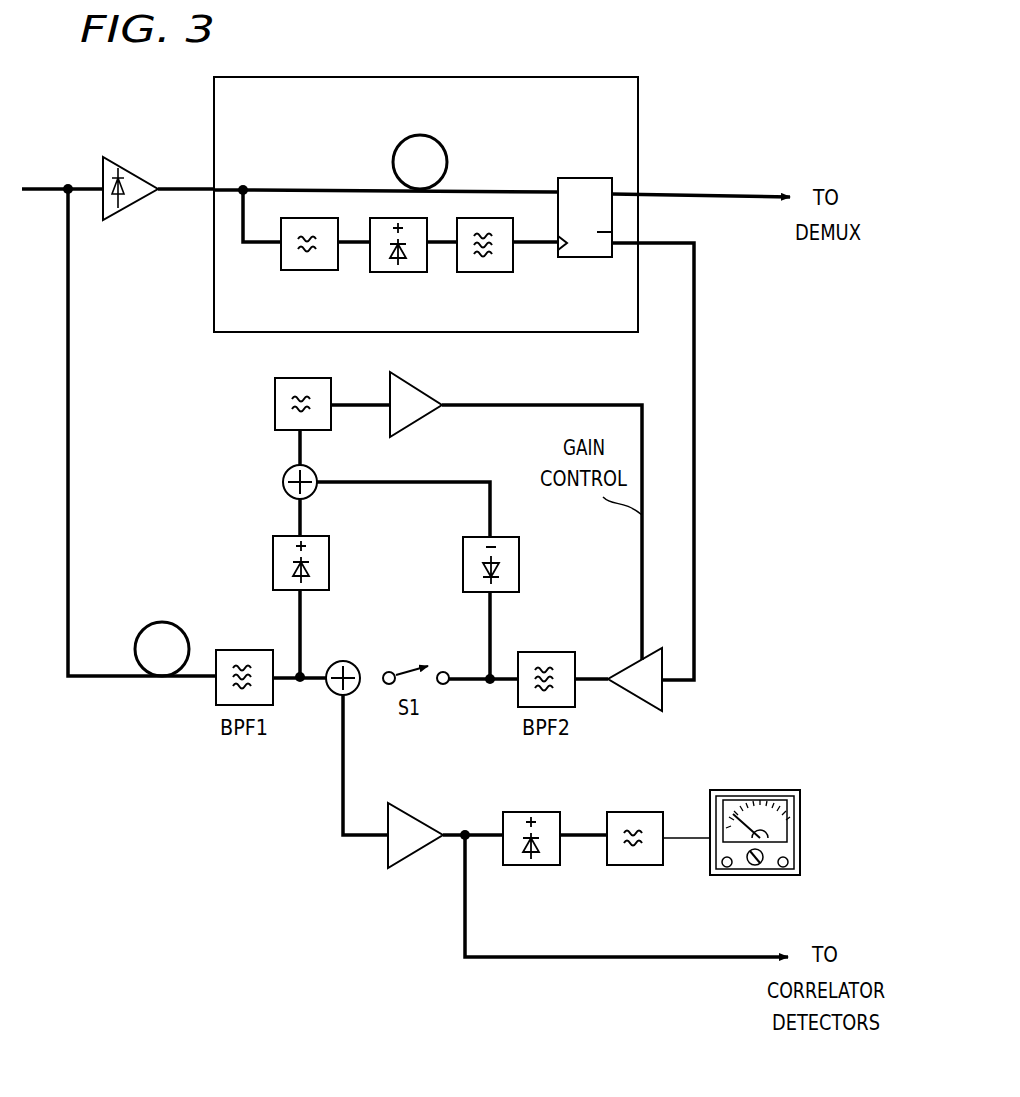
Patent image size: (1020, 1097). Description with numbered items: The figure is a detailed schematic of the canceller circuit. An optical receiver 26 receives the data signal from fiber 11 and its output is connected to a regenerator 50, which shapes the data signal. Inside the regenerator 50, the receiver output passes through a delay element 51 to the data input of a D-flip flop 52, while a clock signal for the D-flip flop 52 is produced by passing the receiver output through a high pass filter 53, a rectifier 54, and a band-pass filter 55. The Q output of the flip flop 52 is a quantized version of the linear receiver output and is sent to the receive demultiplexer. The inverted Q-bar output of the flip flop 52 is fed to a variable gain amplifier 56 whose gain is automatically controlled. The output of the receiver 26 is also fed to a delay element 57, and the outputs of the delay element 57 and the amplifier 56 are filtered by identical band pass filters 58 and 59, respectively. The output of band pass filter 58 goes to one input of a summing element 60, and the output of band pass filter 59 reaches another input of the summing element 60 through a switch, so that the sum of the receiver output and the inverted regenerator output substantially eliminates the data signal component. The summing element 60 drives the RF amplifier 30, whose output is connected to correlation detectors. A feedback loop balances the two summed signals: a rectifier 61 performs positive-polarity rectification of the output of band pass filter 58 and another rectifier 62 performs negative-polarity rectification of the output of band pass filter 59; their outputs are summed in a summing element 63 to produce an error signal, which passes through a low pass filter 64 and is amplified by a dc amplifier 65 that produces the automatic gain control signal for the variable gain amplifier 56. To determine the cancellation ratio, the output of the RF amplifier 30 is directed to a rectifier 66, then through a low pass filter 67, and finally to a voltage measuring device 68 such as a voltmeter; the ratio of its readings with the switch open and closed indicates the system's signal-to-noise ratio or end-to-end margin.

The fiber 11 is at (39, 184).
The optical receiver 26 is at (124, 160).
The RF amplifier 30 is at (398, 808).
The regenerator 50 is at (418, 77).
The delay element 51 is at (393, 157).
The D-flip flop 52 is at (585, 178).
The high pass filter 53 is at (298, 270).
The rectifier 54 is at (386, 272).
The band-pass filter 55 is at (478, 272).
The variable gain amplifier 56 is at (664, 712).
The delay element 57 is at (153, 620).
The band pass filter 58 is at (240, 650).
The band pass filter 59 is at (544, 651).
The summing element 60 is at (350, 660).
The rectifier 61 is at (273, 560).
The rectifier 62 is at (463, 566).
The summing element 63 is at (283, 482).
The low pass filter 64 is at (275, 408).
The dc amplifier 65 is at (428, 420).
The rectifier 66 is at (503, 812).
The low pass filter 67 is at (607, 812).
The voltage measuring device 68 is at (752, 788).